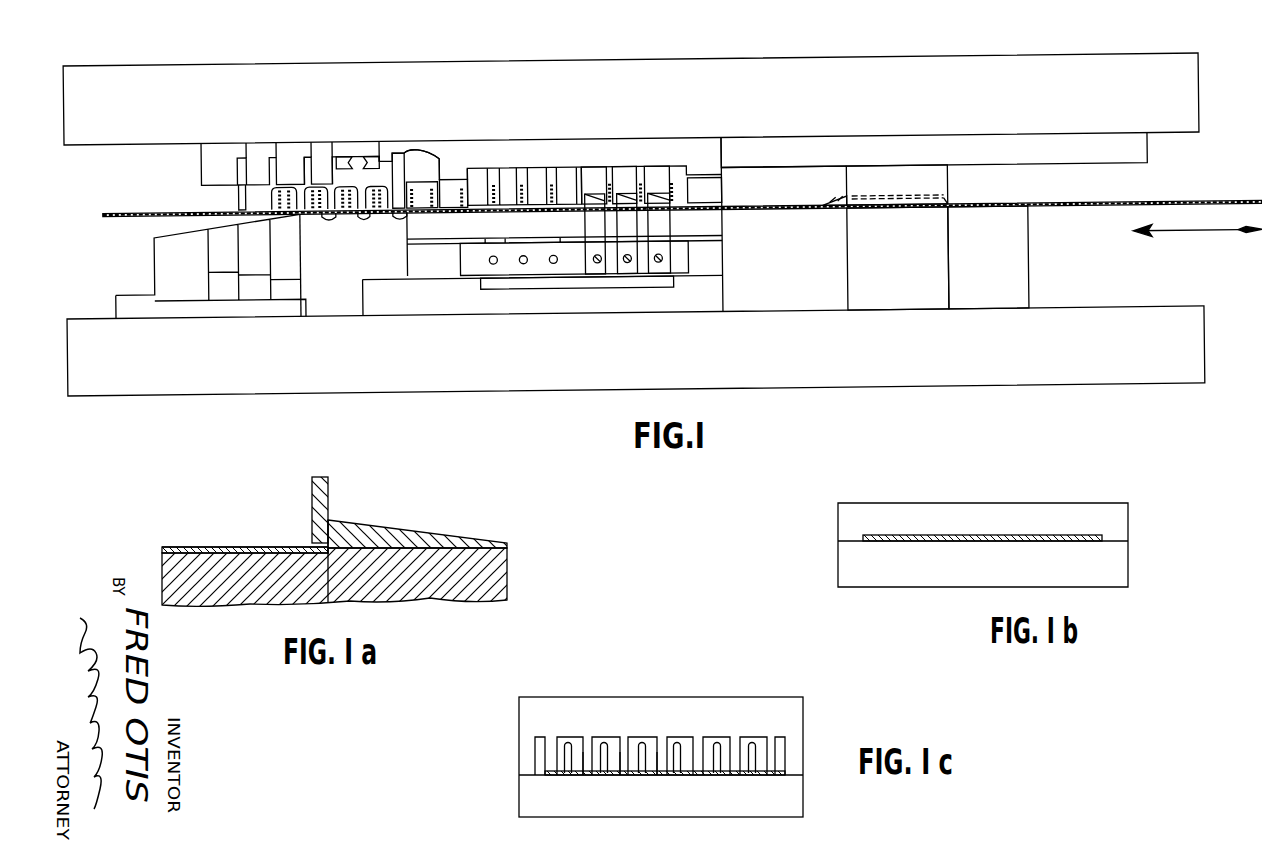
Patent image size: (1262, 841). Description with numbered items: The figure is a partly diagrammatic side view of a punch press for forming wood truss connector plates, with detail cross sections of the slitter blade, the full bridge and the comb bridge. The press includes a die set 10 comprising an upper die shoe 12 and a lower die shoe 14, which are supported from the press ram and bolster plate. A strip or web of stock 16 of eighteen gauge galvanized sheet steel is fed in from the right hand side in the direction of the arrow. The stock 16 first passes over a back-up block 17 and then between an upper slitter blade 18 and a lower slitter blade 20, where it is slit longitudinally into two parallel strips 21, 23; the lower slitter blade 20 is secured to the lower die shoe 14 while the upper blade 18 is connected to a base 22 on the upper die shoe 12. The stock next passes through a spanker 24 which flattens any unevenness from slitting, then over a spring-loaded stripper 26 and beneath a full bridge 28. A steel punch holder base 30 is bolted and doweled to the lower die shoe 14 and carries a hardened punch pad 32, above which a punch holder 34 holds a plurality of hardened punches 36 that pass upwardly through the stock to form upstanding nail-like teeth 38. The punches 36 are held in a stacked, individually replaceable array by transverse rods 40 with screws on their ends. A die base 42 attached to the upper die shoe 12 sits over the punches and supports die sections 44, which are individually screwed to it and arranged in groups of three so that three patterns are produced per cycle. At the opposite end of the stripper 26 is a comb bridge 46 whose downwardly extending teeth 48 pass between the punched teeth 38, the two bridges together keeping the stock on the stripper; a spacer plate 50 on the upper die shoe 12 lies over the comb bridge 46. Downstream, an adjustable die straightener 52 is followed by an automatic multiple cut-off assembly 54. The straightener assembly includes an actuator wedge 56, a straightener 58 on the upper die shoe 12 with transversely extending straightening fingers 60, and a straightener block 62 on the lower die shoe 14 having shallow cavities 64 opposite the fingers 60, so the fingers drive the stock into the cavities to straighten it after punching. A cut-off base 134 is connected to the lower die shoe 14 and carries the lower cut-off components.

In FIG. 1, the die set 10 is at (720, 60).
In FIG. 1, the upper die shoe 12 is at (1154, 112).
In FIG. 1, the lower die shoe 14 is at (1166, 360).
In FIG. 1, the strip or web of stock 16 is at (1118, 214).
In FIG. 1a, the strip or web of stock 16 is at (183, 547).
In FIG. 1b, the strip or web of stock 16 is at (877, 541).
In FIG. 1c, the strip or web of stock 16 is at (598, 778).
In FIG. 1, the back-up block 17 is at (979, 273).
In FIG. 1, the upper slitter blade 18 is at (945, 196).
In FIG. 1a, the upper slitter blade 18 is at (312, 493).
In FIG. 1, the lower slitter blade 20 is at (881, 274).
In FIG. 1a, the lower slitter blade 20 is at (412, 587).
In FIG. 1a, the strip 21 is at (266, 547).
In FIG. 1, the base 22 is at (1024, 173).
In FIG. 1, the strip 23 is at (838, 208).
In FIG. 1a, the strip 23 is at (421, 540).
In FIG. 1, the spanker 24 is at (772, 203).
In FIG. 1, the stripper 26 is at (434, 233).
In FIG. 1b, the stripper 26 is at (976, 572).
In FIG. 1c, the stripper 26 is at (726, 802).
In FIG. 1, the full bridge 28 is at (710, 186).
In FIG. 1b, the full bridge 28 is at (976, 527).
In FIG. 1, the punch holder base 30 is at (468, 290).
In FIG. 1, the punch pad 32 is at (560, 295).
In FIG. 1, the punch holder 34 is at (690, 270).
In FIG. 1, the punches 36 is at (660, 278).
In FIG. 1c, the teeth 38 is at (680, 745).
In FIG. 1, the transverse rods 40 is at (658, 262).
In FIG. 1, the die base 42 is at (575, 172).
In FIG. 1, the die sections 44 is at (625, 178).
In FIG. 1, the comb bridge 46 is at (447, 188).
In FIG. 1c, the comb bridge 46 is at (703, 703).
In FIG. 1, the teeth 48 is at (430, 196).
In FIG. 1c, the teeth 48 is at (660, 742).
In FIG. 1, the spacer plate 50 is at (420, 160).
In FIG. 1, the die straightener 52 is at (378, 137).
In FIG. 1, the multiple cut-off assembly 54 is at (262, 132).
In FIG. 1, the actuator wedge 56 is at (360, 156).
In FIG. 1, the straightener 58 is at (338, 170).
In FIG. 1, the straightening fingers 60 is at (340, 214).
In FIG. 1, the straightener block 62 is at (338, 300).
In FIG. 1, the shallow cavities 64 is at (374, 219).
In FIG. 1, the cut-off base 134 is at (218, 308).